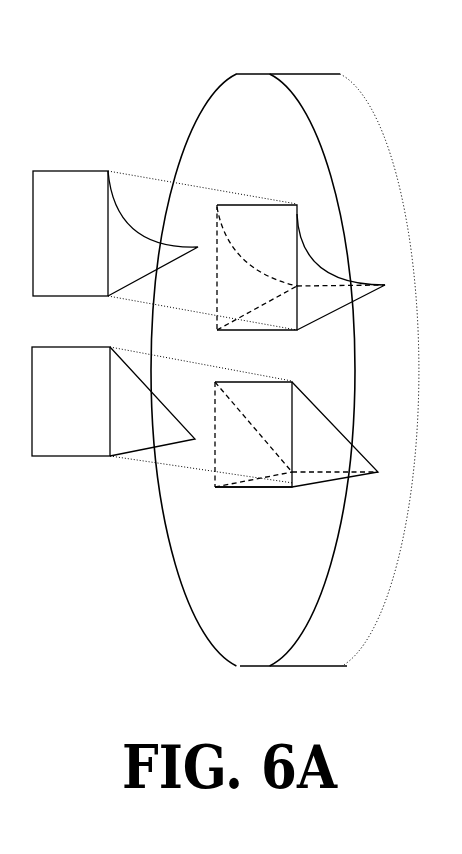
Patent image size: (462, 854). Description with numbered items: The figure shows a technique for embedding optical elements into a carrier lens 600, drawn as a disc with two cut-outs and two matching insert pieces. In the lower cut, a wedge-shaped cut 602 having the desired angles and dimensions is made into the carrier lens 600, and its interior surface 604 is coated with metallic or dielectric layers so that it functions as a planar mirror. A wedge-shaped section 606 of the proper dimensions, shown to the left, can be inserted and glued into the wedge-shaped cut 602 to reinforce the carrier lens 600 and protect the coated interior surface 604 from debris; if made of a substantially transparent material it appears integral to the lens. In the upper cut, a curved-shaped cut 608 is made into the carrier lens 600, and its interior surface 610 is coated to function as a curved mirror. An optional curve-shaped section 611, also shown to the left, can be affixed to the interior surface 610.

The carrier lens 600 is at (303, 73).
The curve-shaped section 611 is at (52, 240).
The wedge-shaped section 606 is at (53, 402).
The interior surface 610 is at (252, 250).
The curved-shaped cut 608 is at (318, 255).
The interior surface 604 is at (270, 407).
The wedge-shaped cut 602 is at (265, 488).